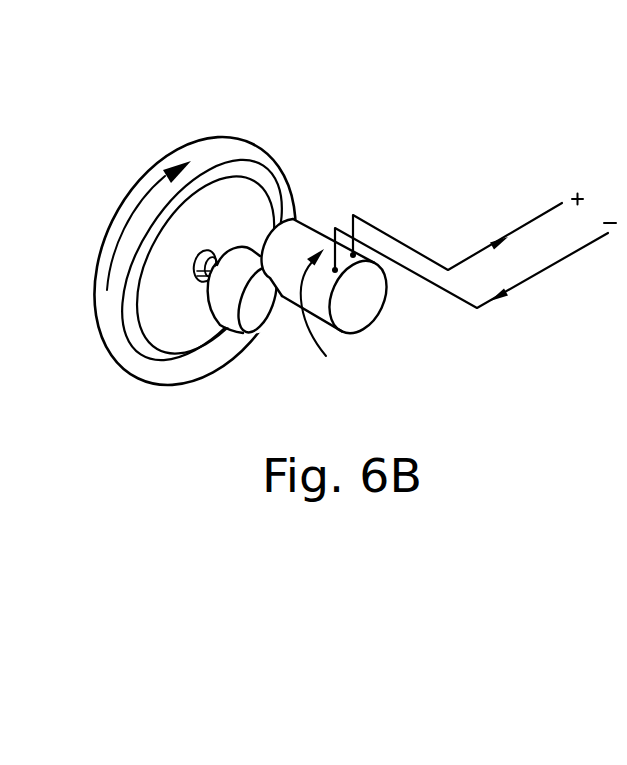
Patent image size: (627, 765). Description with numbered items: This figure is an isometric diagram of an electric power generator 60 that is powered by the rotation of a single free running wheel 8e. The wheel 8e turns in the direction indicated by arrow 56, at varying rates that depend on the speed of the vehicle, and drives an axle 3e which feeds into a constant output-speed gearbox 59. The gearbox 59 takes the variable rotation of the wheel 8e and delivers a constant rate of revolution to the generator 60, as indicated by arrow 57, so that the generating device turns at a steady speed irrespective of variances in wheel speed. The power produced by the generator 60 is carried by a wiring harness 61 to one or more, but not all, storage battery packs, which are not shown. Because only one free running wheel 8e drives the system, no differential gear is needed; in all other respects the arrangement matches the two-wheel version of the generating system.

The free running wheel 8e is at (210, 152).
The arrow indicating direction of wheel rotation 56 is at (135, 210).
The axle 3e is at (195, 272).
The constant output-speed gearbox 59 is at (228, 292).
The arrow indicating constant rate of revolution 57 is at (330, 301).
The electric power generator 60 is at (357, 290).
The wiring harness 61 is at (510, 290).